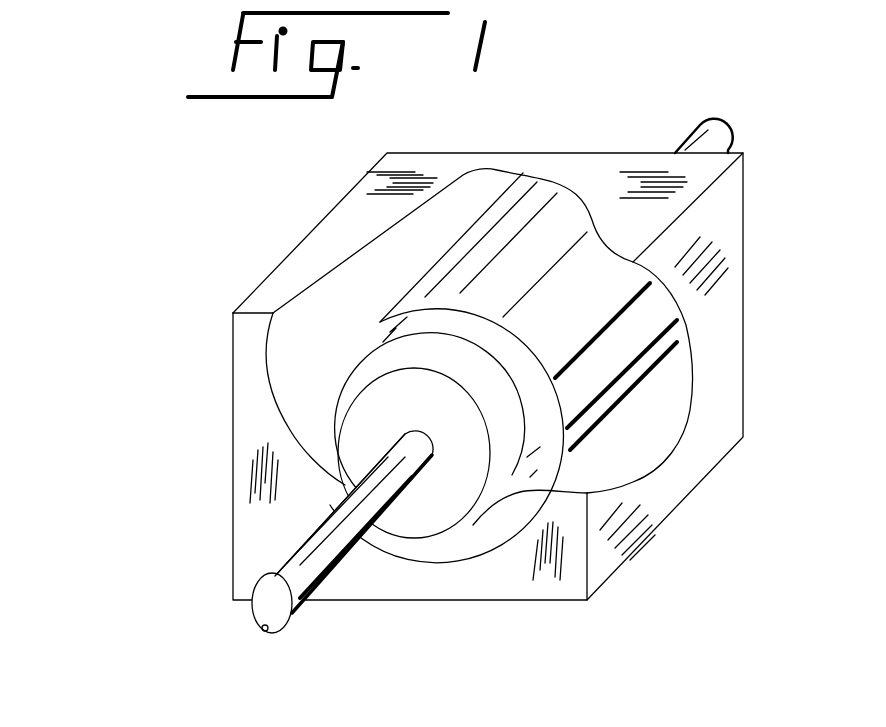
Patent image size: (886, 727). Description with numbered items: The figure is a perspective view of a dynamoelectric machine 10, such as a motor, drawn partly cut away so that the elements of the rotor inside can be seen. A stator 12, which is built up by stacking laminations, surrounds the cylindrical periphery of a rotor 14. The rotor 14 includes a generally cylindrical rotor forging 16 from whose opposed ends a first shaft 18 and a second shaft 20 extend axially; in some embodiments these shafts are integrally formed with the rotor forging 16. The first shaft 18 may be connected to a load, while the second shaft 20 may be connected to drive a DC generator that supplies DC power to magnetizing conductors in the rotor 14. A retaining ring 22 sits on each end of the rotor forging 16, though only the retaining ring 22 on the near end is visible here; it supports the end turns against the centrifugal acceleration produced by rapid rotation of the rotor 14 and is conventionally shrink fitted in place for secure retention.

The dynamoelectric machine 10 is at (238, 206).
The stator 12 is at (665, 412).
The rotor 14 is at (620, 413).
The rotor forging 16 is at (583, 418).
The first shaft 18 is at (292, 612).
The second shaft 20 is at (715, 140).
The retaining ring 22 is at (348, 372).